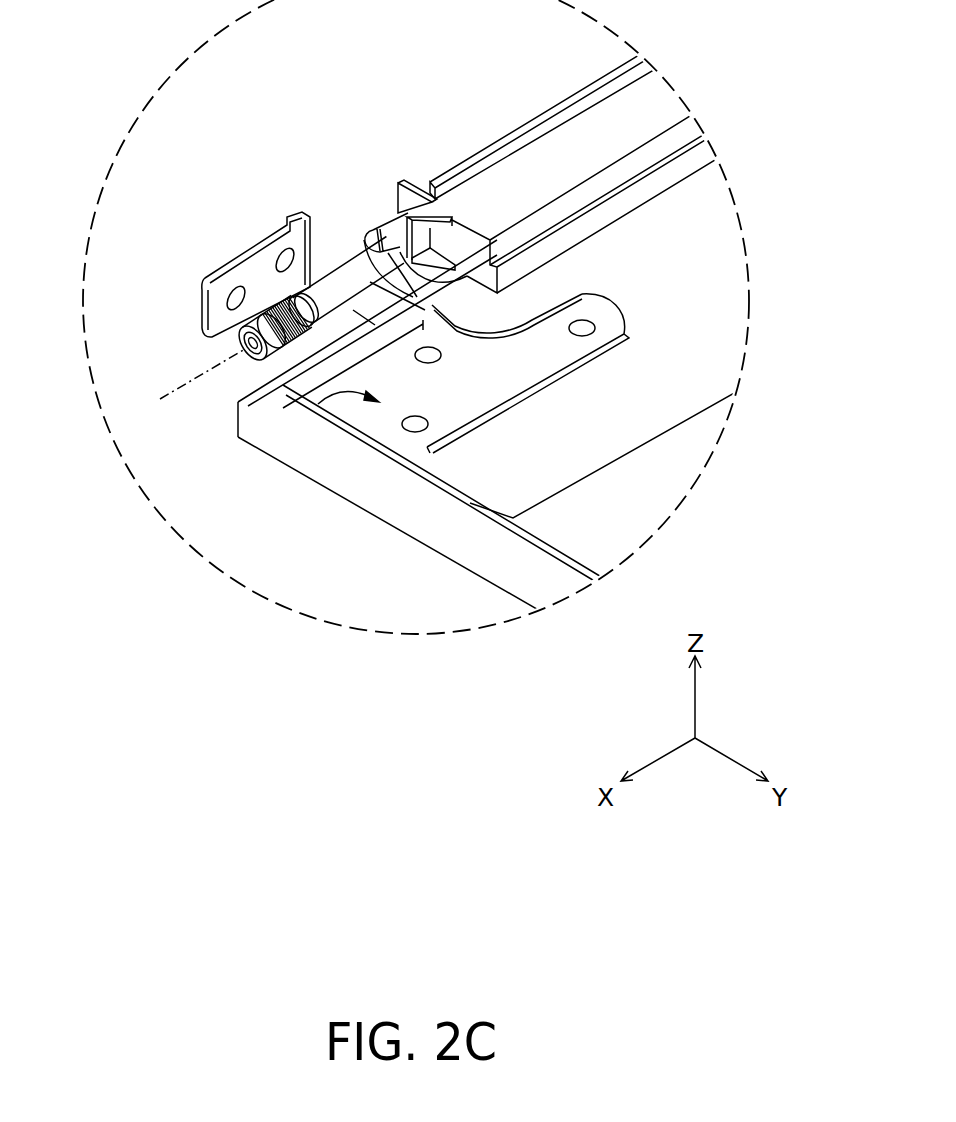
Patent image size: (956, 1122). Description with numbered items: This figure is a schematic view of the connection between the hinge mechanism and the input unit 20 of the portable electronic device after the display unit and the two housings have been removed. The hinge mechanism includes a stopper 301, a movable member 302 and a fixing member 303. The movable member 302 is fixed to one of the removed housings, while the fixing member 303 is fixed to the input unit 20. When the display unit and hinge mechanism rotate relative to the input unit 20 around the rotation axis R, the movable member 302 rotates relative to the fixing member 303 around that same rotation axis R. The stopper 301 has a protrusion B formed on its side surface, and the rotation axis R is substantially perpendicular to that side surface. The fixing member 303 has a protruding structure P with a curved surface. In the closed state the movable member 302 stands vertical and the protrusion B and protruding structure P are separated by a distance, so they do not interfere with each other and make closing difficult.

The input unit 20 is at (447, 541).
The stopper 301 is at (628, 93).
The movable member 302 is at (251, 252).
The fixing member 303 is at (317, 392).
The protrusion B is at (432, 233).
The protruding structure P is at (380, 215).
The rotation axis R is at (191, 390).